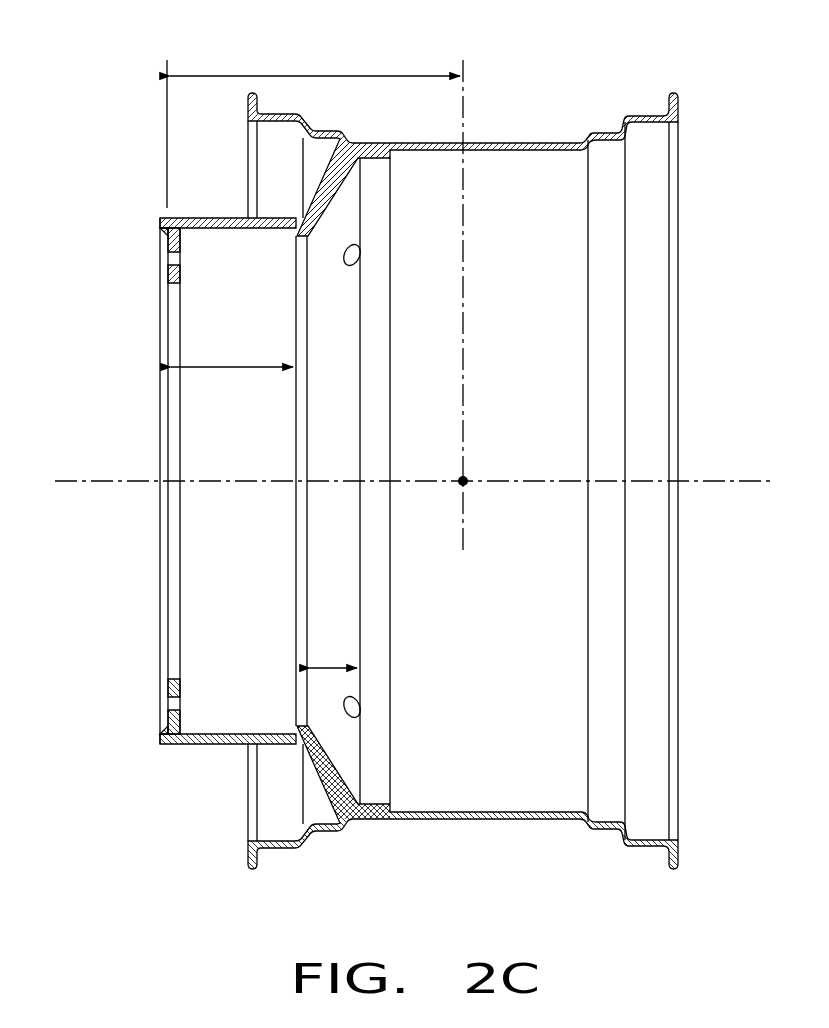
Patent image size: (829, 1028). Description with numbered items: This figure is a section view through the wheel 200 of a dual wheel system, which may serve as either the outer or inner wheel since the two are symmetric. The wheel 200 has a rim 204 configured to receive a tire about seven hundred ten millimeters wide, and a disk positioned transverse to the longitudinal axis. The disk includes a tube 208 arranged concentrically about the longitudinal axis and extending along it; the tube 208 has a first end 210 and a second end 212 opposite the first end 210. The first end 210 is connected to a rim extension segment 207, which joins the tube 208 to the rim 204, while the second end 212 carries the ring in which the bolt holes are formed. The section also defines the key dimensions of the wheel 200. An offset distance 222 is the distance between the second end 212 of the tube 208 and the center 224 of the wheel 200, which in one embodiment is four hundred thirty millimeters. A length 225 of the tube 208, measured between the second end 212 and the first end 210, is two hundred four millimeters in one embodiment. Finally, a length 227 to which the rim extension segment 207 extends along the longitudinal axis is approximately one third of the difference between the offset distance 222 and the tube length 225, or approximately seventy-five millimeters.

The wheel 200 is at (405, 465).
The rim 204 is at (640, 90).
The rim extension segment 207 is at (333, 192).
The tube 208 is at (138, 733).
The first end 210 is at (297, 429).
The second end 212 is at (160, 428).
The offset distance 222 is at (313, 76).
The center 224 is at (463, 481).
The length 225 is at (230, 367).
The length 227 is at (333, 667).